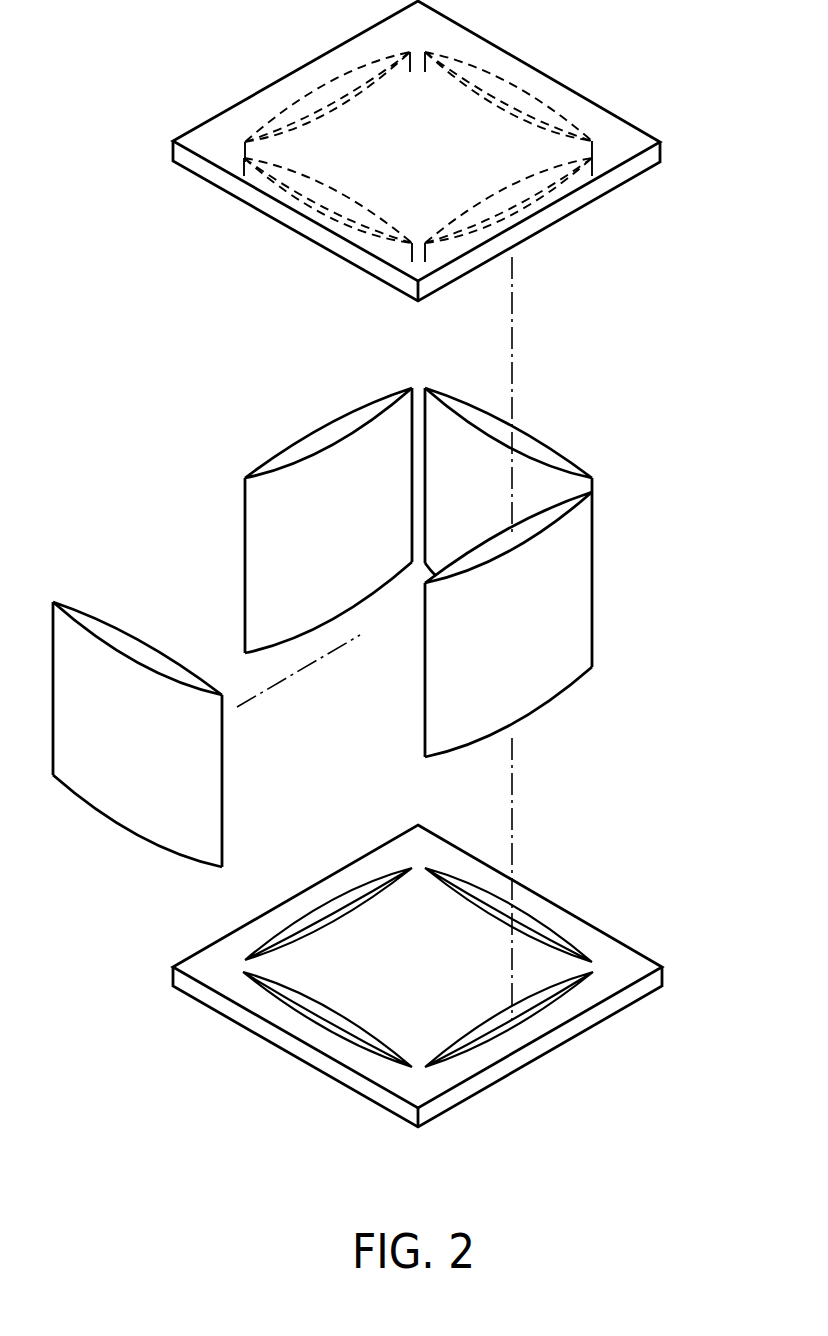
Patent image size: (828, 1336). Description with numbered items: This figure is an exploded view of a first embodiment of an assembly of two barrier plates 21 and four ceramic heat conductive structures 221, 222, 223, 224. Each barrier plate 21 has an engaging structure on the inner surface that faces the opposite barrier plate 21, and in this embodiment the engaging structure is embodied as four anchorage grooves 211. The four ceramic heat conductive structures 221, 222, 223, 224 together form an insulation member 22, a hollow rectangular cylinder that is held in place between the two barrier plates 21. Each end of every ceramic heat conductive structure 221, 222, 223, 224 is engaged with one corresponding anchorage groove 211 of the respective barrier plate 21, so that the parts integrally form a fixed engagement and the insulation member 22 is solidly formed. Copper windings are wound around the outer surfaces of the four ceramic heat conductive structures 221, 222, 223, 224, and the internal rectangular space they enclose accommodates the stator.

The barrier plate 21 is at (602, 128).
The anchorage groove 211 is at (322, 100).
The insulation member 22 is at (268, 307).
The ceramic heat conductive structure 221 is at (470, 410).
The ceramic heat conductive structure 222 is at (312, 442).
The ceramic heat conductive structure 223 is at (483, 552).
The ceramic heat conductive structure 224 is at (137, 648).